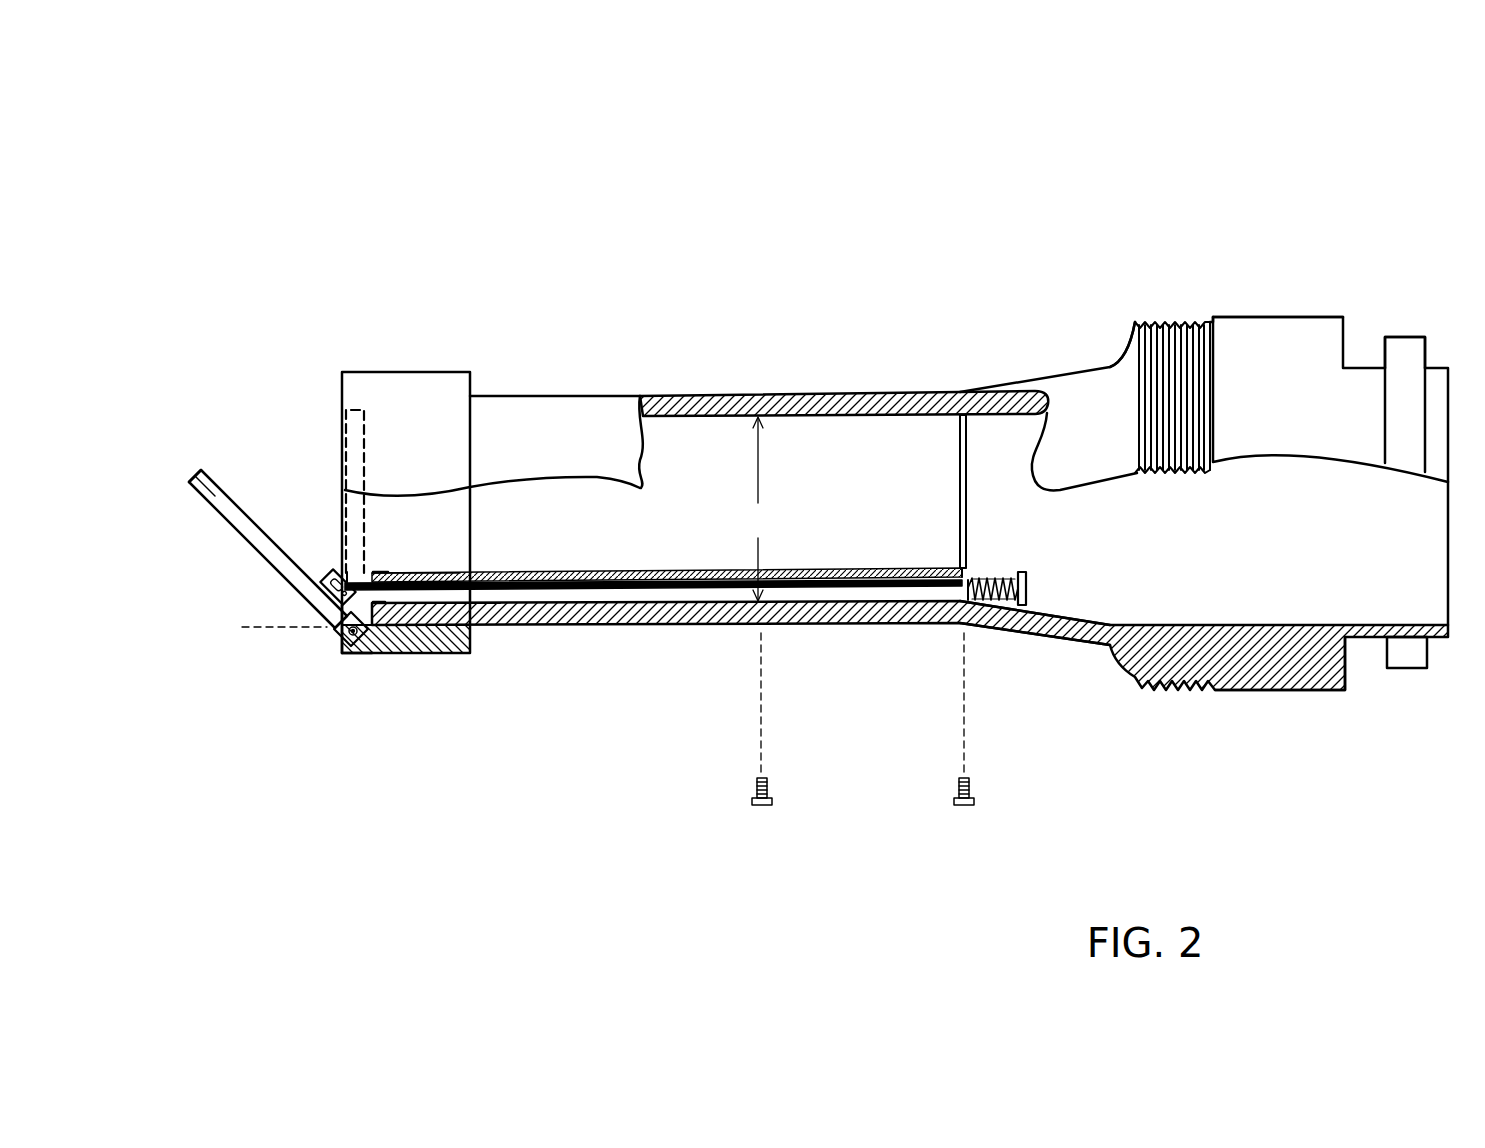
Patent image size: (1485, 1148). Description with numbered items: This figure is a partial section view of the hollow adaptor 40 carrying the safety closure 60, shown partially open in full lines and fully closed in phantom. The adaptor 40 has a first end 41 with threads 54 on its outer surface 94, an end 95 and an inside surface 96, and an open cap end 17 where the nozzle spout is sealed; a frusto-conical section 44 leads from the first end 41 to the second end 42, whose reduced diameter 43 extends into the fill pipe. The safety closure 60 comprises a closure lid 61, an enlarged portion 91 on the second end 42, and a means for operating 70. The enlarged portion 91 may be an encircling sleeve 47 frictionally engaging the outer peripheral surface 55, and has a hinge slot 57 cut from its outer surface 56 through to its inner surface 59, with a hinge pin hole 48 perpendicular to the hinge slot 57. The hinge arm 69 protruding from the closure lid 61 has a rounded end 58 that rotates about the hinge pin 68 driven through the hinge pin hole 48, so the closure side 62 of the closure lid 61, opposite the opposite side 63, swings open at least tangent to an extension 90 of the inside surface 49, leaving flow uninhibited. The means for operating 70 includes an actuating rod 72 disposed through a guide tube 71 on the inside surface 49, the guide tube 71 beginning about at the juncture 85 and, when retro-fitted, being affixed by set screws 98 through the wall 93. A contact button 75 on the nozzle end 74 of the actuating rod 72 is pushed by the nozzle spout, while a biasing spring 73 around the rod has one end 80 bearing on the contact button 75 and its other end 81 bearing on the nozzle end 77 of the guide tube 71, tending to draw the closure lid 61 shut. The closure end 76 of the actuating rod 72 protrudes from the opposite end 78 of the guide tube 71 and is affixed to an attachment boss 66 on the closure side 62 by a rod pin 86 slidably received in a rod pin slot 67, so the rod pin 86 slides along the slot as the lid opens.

The open cap end 17 is at (1449, 417).
The hollow adaptor 40 is at (648, 158).
The first end 41 is at (1283, 318).
The second end 42 is at (389, 295).
The reduced diameter 43 is at (758, 509).
The frusto-conical section 44 is at (1056, 371).
The encircling sleeve 47 is at (448, 387).
The hinge pin hole 48 is at (360, 643).
The inside surface 49 is at (706, 430).
The threads 54 is at (1186, 320).
The outer peripheral surface 55 is at (603, 395).
The outer surface 56 is at (429, 372).
The hinge slot 57 is at (383, 655).
The rounded end 58 is at (357, 643).
The inner surface 59 is at (480, 562).
The safety closure 60 is at (290, 720).
The closure lid 61 is at (258, 537).
The closure side 62 is at (232, 497).
The opposite side 63 is at (213, 513).
The attachment boss 66 is at (330, 580).
The rod pin slot 67 is at (323, 588).
The hinge pin 68 is at (366, 650).
The hinge arm 69 is at (343, 640).
The means for operating 70 is at (943, 537).
The guide tube 71 is at (722, 570).
The actuating rod 72 is at (347, 567).
The biasing spring 73 is at (990, 572).
The nozzle end 74 is at (1005, 603).
The contact button 75 is at (1028, 606).
The closure end 76 is at (344, 567).
The nozzle end 77 is at (960, 503).
The opposite end 78 is at (390, 573).
The one end 80 is at (998, 565).
The other end 81 is at (968, 510).
The juncture 85 is at (951, 636).
The rod pin 86 is at (345, 572).
The extension 90 is at (267, 630).
The enlarged portion 91 is at (412, 290).
The wall 93 is at (752, 624).
The outer surface 94 is at (1246, 318).
The end 95 is at (1123, 357).
The inside surface 96 is at (1243, 625).
The set screws 98 is at (953, 804).